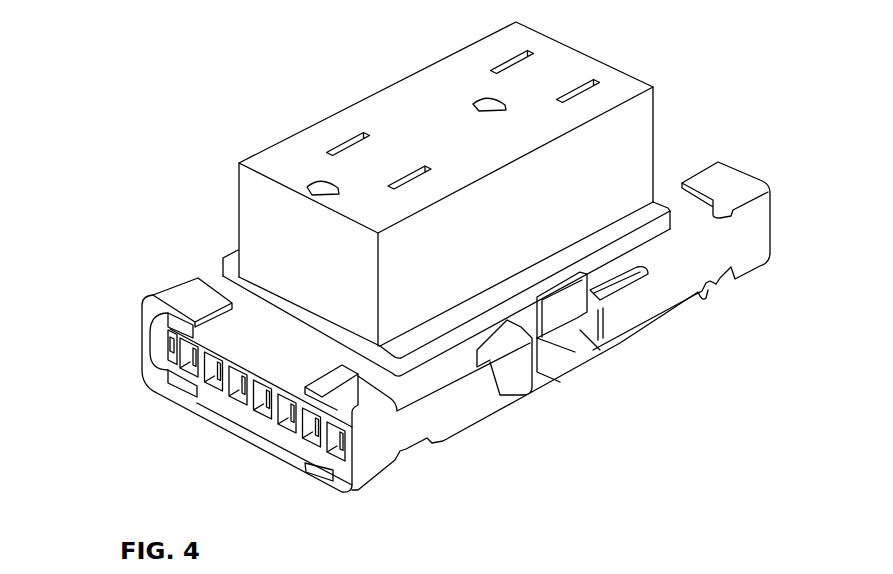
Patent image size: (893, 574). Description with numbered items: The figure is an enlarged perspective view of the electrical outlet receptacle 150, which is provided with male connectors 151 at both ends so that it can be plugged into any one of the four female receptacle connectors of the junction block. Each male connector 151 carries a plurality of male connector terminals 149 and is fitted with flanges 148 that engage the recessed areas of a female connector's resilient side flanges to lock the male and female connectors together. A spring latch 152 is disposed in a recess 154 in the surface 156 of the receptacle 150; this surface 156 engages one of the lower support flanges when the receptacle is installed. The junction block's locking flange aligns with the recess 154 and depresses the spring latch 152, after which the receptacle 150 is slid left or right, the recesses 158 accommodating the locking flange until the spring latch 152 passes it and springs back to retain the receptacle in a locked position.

The flanges 148 is at (733, 165).
The male connector terminals 149 is at (170, 343).
The electrical outlet receptacle 150 is at (637, 80).
The male connectors 151 is at (674, 150).
The spring latch 152 is at (565, 310).
The recess 154 is at (537, 372).
The surface 156 is at (450, 410).
The recesses 158 is at (627, 290).